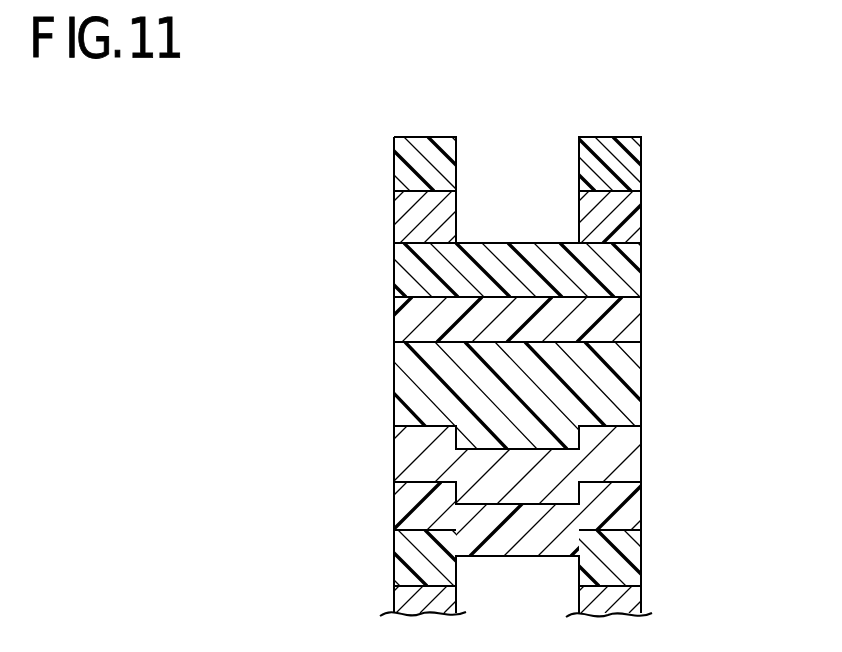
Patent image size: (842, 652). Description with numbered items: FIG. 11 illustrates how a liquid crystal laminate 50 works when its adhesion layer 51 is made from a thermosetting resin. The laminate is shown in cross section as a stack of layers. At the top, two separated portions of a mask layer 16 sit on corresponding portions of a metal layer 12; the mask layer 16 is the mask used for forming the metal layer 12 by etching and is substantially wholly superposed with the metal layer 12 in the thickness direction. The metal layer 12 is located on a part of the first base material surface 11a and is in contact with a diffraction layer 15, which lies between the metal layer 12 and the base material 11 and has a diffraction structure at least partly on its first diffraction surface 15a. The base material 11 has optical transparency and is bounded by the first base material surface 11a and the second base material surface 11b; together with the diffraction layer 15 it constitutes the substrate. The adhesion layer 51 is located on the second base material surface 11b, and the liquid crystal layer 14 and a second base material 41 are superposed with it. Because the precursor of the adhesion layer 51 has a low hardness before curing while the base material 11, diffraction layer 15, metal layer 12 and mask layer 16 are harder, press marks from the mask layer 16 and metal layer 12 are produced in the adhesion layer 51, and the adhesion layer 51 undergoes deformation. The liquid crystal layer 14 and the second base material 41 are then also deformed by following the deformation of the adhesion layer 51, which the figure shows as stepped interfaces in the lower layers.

The liquid crystal laminate 50 is at (723, 120).
The mask layer 16 is at (641, 171).
The metal layer 12 is at (641, 217).
The diffraction layer 15 is at (641, 269).
The first diffraction surface 15a is at (412, 243).
The base material 11 is at (641, 324).
The first base material surface 11a is at (415, 297).
The second base material surface 11b is at (422, 343).
The adhesion layer 51 is at (641, 384).
The liquid crystal layer 14 is at (641, 454).
The second base material 41 is at (641, 502).